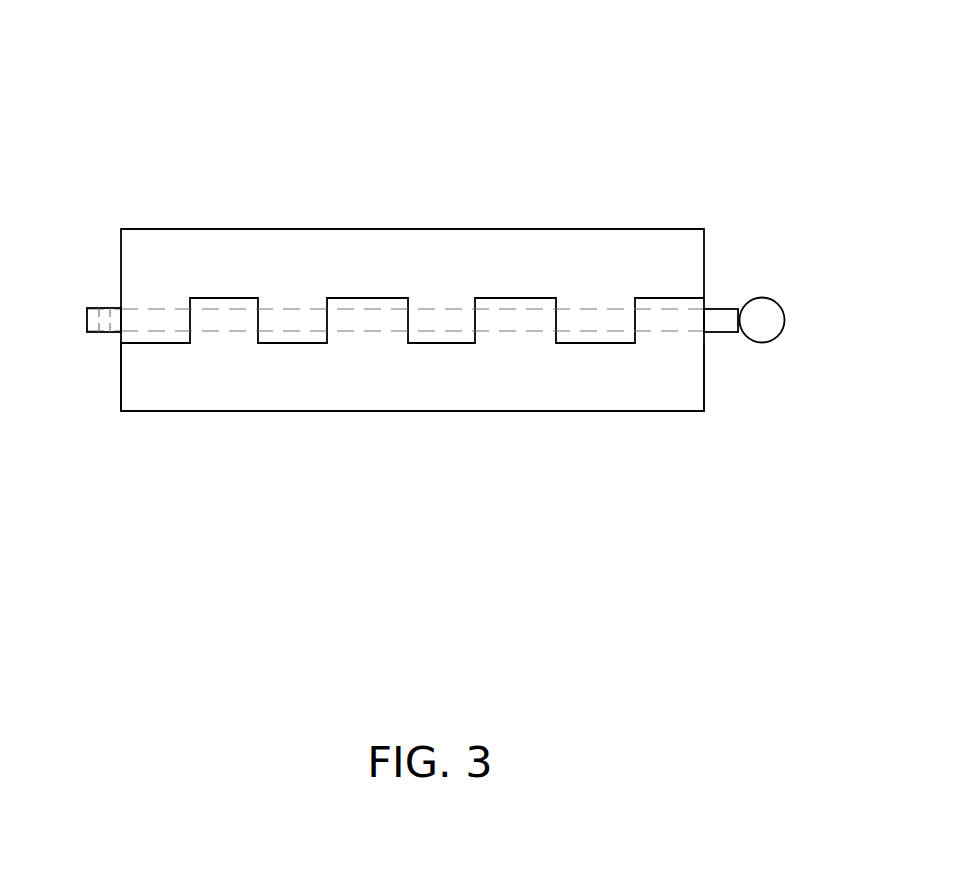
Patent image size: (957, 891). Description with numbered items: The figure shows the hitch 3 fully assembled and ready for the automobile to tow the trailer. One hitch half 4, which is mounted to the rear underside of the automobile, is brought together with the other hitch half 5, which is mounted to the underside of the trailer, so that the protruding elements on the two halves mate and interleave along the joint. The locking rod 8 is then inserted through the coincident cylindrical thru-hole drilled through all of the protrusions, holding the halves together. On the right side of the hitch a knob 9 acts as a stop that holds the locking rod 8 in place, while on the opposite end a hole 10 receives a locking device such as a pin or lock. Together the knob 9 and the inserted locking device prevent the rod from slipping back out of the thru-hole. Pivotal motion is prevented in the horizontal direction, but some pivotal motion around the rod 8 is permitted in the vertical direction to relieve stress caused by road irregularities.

The hitch 3 is at (386, 136).
The hitch half 4 is at (258, 229).
The hitch half 5 is at (522, 411).
The locking rod 8 is at (592, 309).
The knob 9 is at (762, 343).
The hole 10 is at (99, 332).